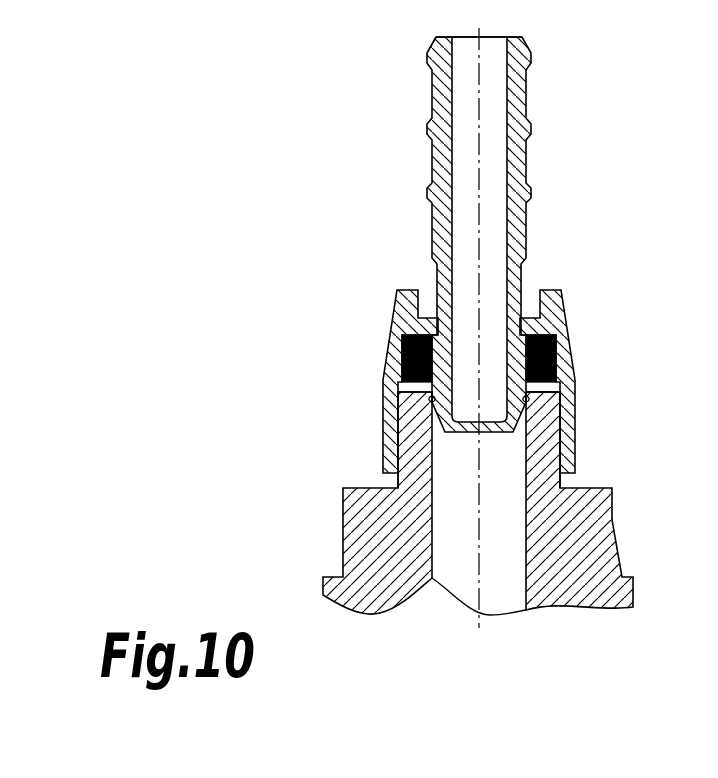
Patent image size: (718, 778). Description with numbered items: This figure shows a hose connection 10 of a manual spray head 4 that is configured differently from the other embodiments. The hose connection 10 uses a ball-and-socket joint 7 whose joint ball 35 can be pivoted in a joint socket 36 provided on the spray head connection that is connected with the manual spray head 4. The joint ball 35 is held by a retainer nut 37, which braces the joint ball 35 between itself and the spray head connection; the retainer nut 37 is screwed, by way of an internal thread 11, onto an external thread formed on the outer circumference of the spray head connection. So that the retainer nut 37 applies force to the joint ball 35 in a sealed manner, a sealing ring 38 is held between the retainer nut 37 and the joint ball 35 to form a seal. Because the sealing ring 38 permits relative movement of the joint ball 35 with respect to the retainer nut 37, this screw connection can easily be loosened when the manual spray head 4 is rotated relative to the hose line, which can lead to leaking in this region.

The manual spray head 4 is at (640, 585).
The ball-and-socket joint 7 is at (572, 382).
The tube / hose connector 10 is at (513, 160).
The internal thread 11 is at (412, 453).
The joint ball 35 is at (542, 391).
The joint socket 36 is at (428, 397).
The retainer nut 37 is at (562, 331).
The sealing ring 38 is at (400, 326).